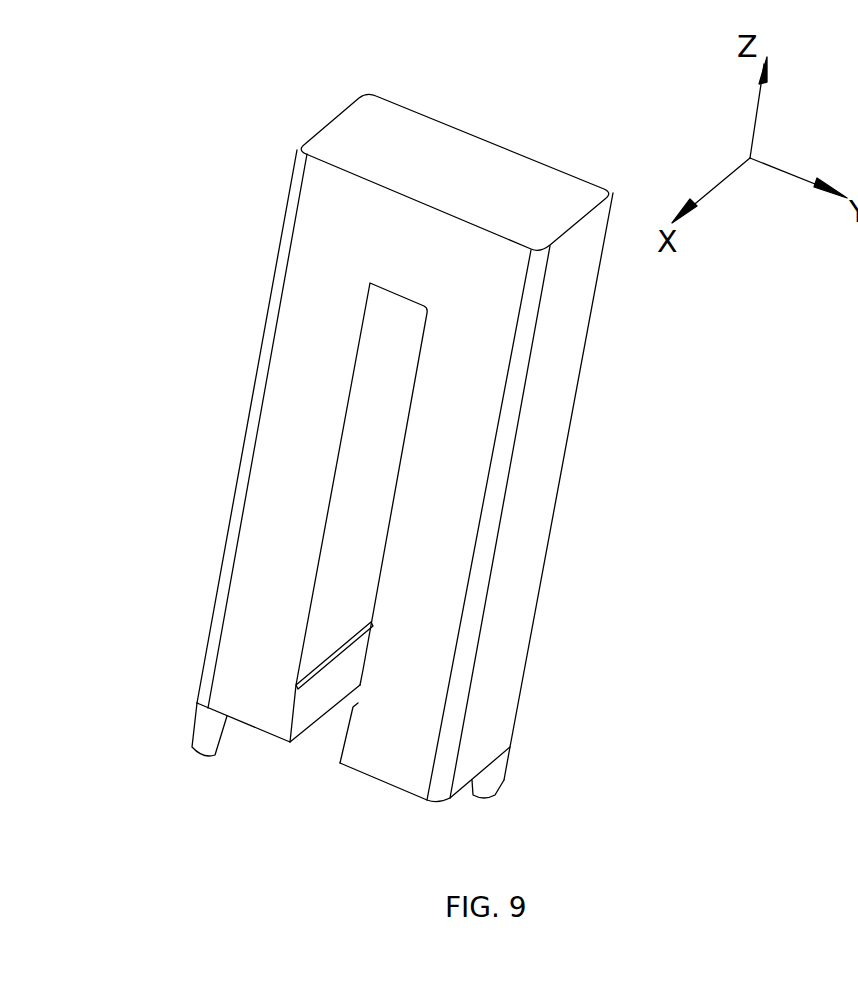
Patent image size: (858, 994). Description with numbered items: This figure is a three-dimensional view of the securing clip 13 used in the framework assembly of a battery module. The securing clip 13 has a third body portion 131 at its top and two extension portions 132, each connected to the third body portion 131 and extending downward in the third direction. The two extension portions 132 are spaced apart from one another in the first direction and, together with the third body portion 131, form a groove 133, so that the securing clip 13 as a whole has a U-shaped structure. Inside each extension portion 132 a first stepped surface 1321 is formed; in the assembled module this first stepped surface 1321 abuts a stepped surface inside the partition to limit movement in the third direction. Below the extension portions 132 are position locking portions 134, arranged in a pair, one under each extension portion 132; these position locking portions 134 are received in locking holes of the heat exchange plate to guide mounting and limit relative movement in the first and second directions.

The securing clip 13 is at (162, 127).
The third body portion 131 is at (458, 158).
The extension portion 132 is at (287, 413).
The first stepped surface 1321 is at (320, 660).
The groove 133 is at (327, 733).
The position locking portion 134 is at (210, 728).